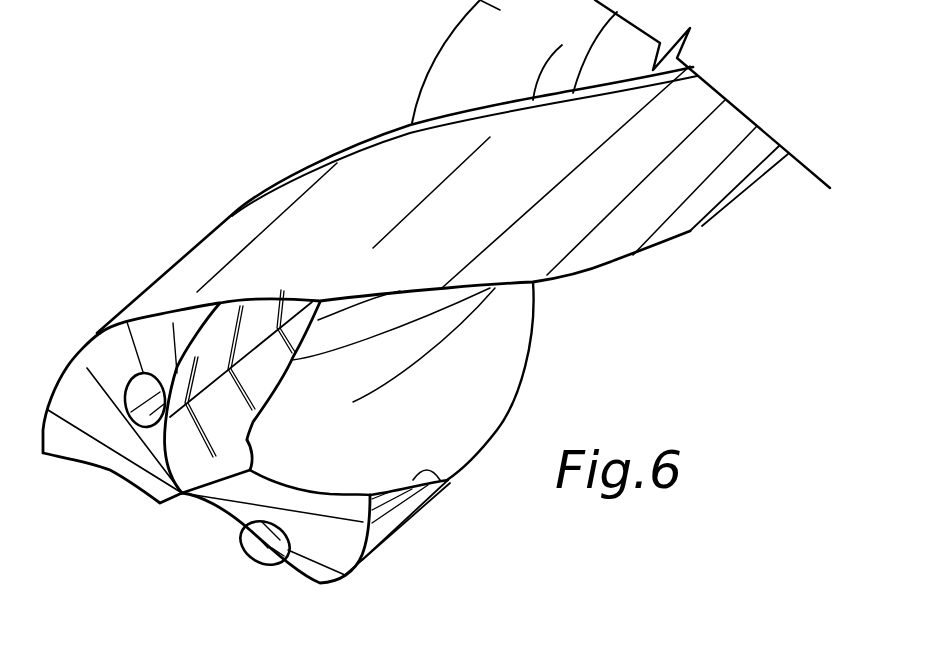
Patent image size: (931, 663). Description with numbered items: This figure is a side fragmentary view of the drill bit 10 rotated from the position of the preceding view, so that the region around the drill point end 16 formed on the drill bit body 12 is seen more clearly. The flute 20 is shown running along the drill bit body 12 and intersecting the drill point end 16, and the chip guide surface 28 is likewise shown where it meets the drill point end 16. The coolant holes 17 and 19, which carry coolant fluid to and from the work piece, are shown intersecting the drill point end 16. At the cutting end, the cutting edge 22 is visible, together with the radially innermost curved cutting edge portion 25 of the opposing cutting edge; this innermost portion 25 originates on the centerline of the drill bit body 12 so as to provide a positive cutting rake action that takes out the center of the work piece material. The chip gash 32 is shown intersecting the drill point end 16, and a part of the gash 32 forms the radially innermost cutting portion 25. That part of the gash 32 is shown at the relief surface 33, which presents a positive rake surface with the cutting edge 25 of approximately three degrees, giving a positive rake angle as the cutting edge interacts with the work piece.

The drill bit 10 is at (158, 249).
The drill bit body 12 is at (232, 215).
The drill point end 16 is at (182, 495).
The coolant hole 17 is at (291, 553).
The coolant hole 19 is at (128, 378).
The flute 20 is at (505, 352).
The cutting edge 22 is at (75, 460).
The radially innermost curved cutting edge portion 25 is at (232, 476).
The chip guide surface 28 is at (220, 297).
The chip gash 32 is at (223, 417).
The relief surface 33 is at (253, 460).